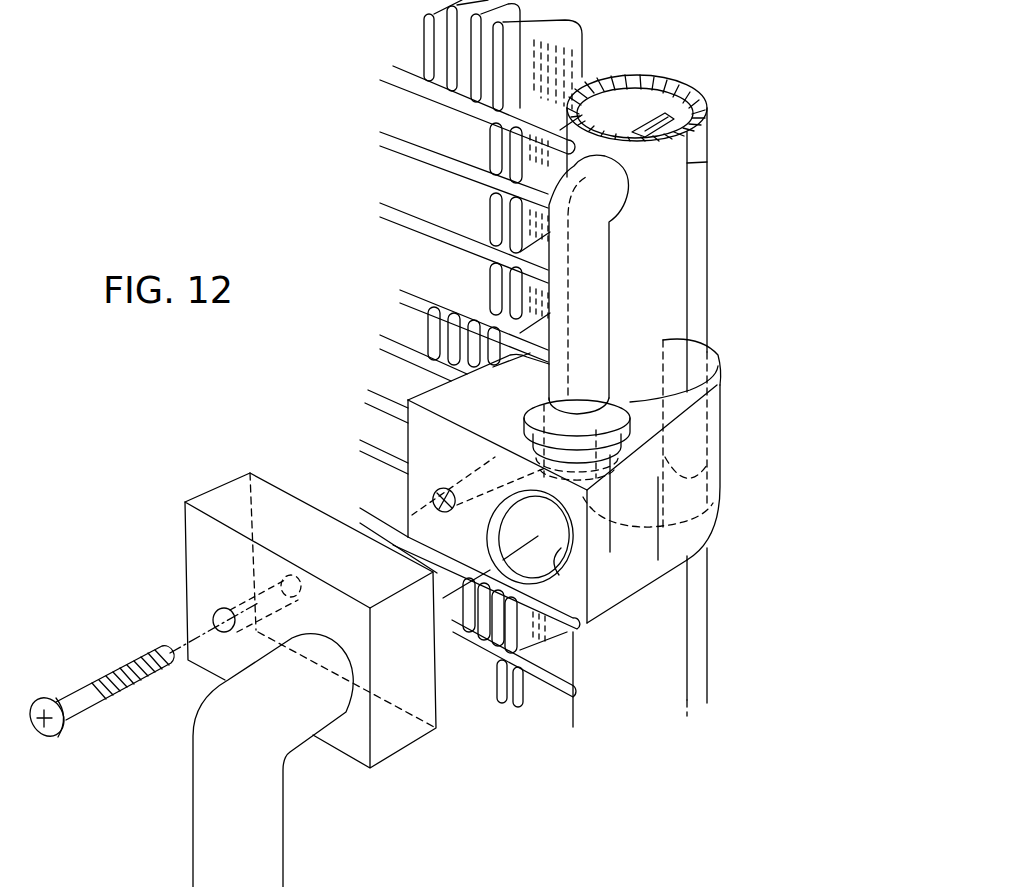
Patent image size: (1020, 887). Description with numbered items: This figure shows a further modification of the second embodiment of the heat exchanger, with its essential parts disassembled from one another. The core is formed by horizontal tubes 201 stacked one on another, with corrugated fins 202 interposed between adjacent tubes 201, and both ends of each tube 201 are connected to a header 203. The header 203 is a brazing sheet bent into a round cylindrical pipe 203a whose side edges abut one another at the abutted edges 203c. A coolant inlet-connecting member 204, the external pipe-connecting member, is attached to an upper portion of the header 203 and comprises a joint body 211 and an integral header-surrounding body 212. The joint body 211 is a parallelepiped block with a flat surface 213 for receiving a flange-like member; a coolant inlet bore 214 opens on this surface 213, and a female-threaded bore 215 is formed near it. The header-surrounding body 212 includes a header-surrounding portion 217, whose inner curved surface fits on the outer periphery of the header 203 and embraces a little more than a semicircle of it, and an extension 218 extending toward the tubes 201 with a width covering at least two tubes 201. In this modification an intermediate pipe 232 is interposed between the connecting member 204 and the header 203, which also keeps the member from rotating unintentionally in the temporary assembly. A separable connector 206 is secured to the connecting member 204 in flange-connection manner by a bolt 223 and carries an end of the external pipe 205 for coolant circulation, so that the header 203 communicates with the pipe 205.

The horizontal tubes 201 is at (438, 166).
The corrugated fins 202 is at (425, 77).
The header 203 is at (805, 273).
The cylindrical pipe 203a is at (697, 207).
The abutted side edges 203c is at (707, 162).
The coolant inlet-connecting member 204 is at (722, 458).
The external pipe 205 is at (213, 805).
The separable connector 206 is at (221, 493).
The joint body 211 is at (352, 362).
The header-surrounding body 212 is at (810, 360).
The flat surface 213 is at (432, 434).
The coolant inlet bore 214 is at (583, 603).
The female-threaded bore 215 is at (432, 502).
The header-surrounding portion 217 is at (693, 402).
The extension 218 is at (528, 365).
The bolt 223 is at (121, 667).
The intermediate pipe 232 is at (595, 276).